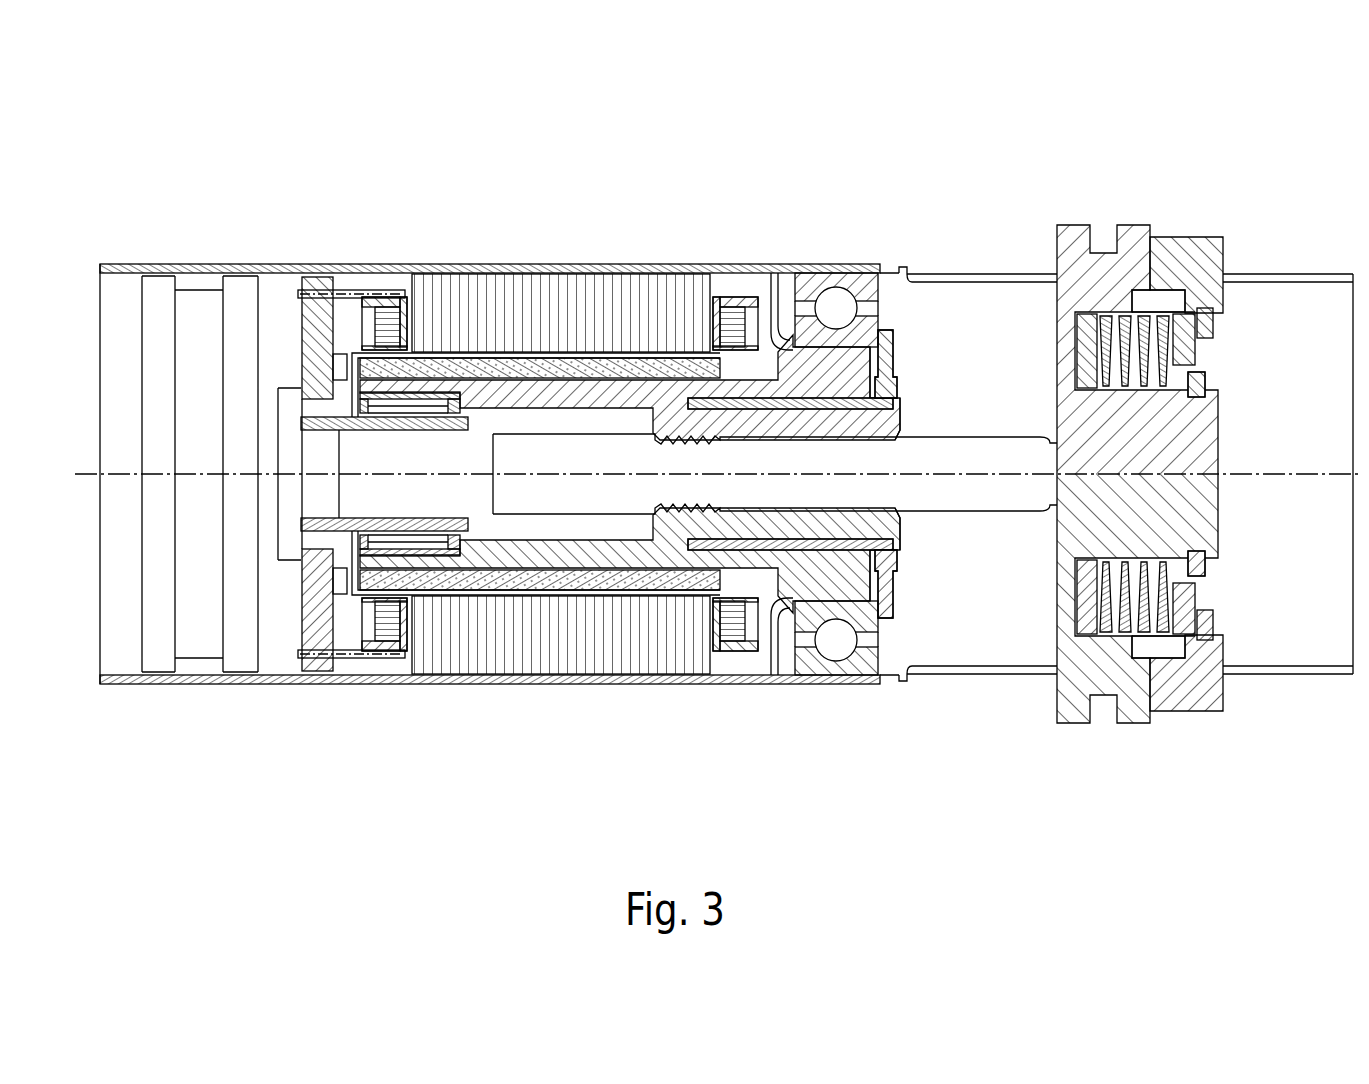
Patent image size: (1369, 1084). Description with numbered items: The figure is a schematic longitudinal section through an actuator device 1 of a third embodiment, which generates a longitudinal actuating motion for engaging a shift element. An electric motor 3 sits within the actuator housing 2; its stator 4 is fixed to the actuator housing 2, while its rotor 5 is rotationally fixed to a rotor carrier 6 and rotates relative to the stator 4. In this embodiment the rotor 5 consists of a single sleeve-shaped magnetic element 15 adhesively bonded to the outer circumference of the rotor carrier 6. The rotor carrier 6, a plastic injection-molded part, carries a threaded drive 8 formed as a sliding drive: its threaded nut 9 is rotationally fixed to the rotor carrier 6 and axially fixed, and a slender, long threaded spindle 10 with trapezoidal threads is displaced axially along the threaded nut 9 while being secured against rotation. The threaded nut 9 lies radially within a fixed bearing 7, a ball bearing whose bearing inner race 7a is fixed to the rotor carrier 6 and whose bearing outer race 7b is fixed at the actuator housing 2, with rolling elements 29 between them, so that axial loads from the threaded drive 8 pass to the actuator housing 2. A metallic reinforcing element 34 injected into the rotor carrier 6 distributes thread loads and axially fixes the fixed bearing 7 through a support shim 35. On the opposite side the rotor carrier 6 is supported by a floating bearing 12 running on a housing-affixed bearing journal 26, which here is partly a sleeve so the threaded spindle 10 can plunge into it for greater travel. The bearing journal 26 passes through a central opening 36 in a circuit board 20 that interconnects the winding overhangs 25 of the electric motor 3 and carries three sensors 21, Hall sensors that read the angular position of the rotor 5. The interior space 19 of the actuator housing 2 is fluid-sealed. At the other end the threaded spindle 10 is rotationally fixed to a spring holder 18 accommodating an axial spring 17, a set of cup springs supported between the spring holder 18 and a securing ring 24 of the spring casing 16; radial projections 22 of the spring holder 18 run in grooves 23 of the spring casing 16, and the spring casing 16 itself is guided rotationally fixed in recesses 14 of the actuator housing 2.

The actuator device 1 is at (158, 168).
The actuator housing 2 is at (257, 264).
The electric motor 3 is at (371, 262).
The stator 4 is at (447, 298).
The rotor 5 is at (744, 369).
The rotor carrier 6 is at (555, 548).
The fixed bearing 7 is at (897, 315).
The bearing inner race 7a is at (896, 625).
The bearing outer race 7b is at (858, 655).
The threaded drive 8 is at (636, 528).
The threaded nut 9 is at (897, 426).
The threaded spindle 10 is at (1010, 487).
The floating bearing 12 is at (486, 419).
The recesses 14 is at (1016, 272).
The magnetic element 15 is at (440, 573).
The spring casing 16 is at (1193, 248).
The axial spring 17 is at (1158, 648).
The spring holder 18 is at (1193, 503).
The interior space 19 is at (473, 500).
The circuit board 20 is at (340, 578).
The sensors 21 is at (308, 582).
The radial projections 22 is at (1073, 305).
The grooves 23 is at (1160, 285).
The securing ring 24 is at (1207, 328).
The winding overhangs 25 is at (380, 637).
The bearing journal 26 is at (303, 523).
The rolling elements 29 is at (828, 642).
The reinforcing element 34 is at (697, 395).
The support shim 35 is at (872, 352).
The central opening 36 is at (323, 411).